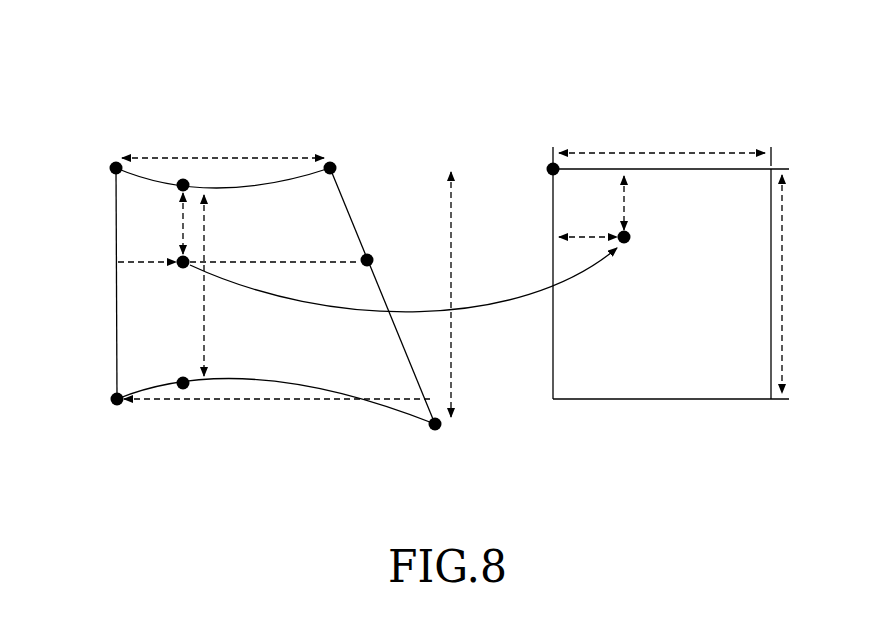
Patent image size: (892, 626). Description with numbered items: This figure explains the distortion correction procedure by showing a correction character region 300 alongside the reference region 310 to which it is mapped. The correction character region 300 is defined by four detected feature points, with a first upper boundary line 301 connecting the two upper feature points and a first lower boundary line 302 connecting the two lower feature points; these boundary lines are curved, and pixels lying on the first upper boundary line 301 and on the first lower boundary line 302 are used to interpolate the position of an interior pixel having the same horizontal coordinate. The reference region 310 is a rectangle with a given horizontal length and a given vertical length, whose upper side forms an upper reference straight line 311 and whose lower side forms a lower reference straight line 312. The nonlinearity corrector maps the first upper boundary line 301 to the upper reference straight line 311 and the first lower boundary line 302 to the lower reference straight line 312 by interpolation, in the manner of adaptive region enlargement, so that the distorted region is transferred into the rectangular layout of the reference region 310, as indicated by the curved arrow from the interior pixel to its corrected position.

The correction character region 300 is at (116, 133).
The first upper boundary line 301 is at (268, 186).
The first lower boundary line 302 is at (239, 378).
The reference region 310 is at (766, 121).
The upper reference straight line 311 is at (691, 172).
The lower reference straight line 312 is at (666, 402).